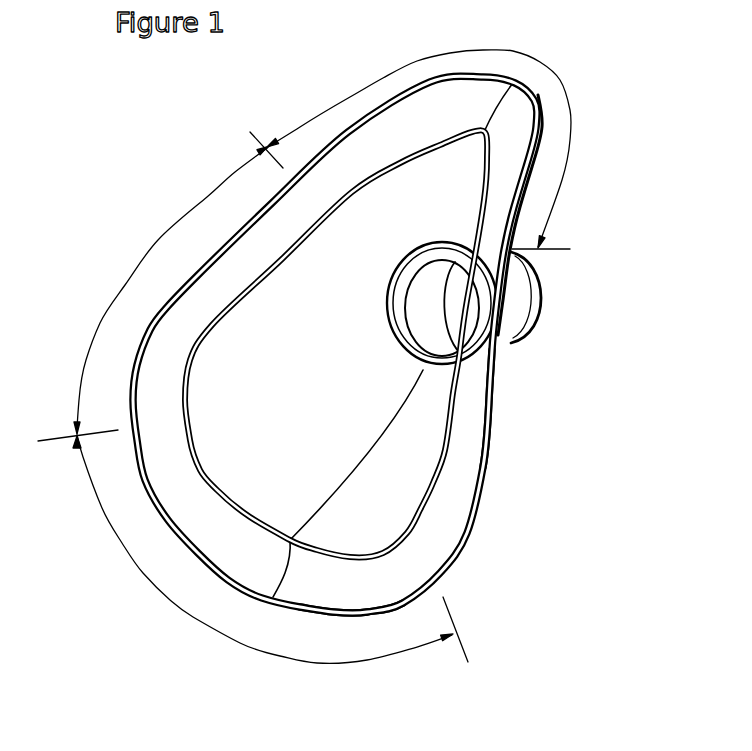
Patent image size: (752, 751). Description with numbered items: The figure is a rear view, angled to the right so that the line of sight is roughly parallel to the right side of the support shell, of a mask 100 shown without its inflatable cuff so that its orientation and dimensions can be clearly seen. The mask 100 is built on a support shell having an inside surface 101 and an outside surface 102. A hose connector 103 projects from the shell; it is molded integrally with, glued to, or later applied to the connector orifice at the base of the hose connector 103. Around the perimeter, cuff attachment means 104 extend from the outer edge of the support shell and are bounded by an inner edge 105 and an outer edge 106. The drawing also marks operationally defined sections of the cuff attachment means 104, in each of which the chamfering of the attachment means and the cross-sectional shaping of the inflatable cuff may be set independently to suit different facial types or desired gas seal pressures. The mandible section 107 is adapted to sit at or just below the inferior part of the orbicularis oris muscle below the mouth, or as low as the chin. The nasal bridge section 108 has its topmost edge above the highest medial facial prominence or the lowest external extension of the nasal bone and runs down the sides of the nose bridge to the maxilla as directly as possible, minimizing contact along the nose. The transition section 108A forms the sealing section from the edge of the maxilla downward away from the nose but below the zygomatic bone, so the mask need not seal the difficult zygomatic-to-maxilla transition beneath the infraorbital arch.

The mask 100 is at (481, 598).
The inside surface 101 is at (336, 343).
The outside surface 102 is at (509, 328).
The hose connector 103 is at (532, 290).
The cuff attachment means 104 is at (443, 533).
The inner edge 105 is at (434, 474).
The outer edge 106 is at (490, 482).
The mandible section 107 is at (272, 570).
The nasal bridge section 108 is at (410, 130).
The transition section 108A is at (152, 297).